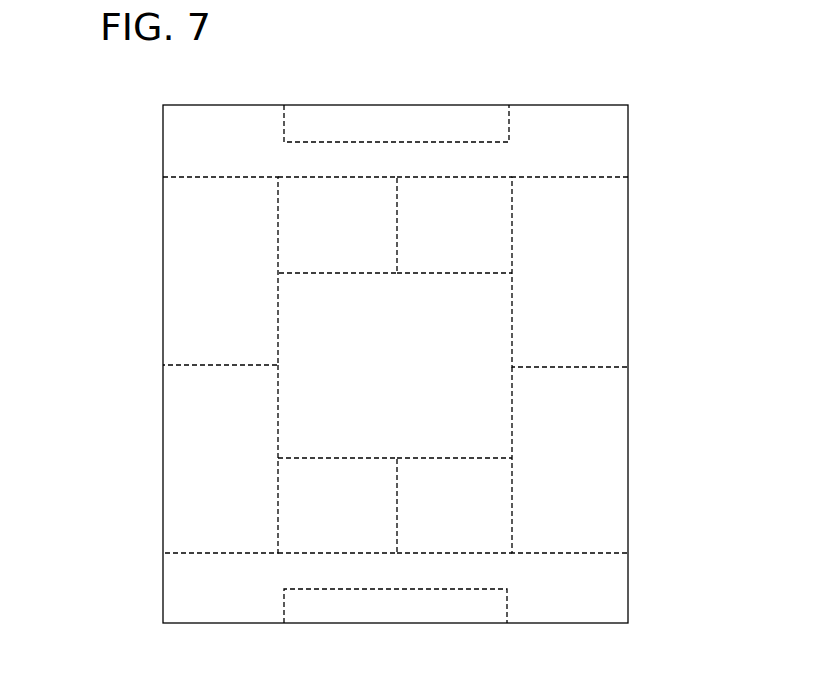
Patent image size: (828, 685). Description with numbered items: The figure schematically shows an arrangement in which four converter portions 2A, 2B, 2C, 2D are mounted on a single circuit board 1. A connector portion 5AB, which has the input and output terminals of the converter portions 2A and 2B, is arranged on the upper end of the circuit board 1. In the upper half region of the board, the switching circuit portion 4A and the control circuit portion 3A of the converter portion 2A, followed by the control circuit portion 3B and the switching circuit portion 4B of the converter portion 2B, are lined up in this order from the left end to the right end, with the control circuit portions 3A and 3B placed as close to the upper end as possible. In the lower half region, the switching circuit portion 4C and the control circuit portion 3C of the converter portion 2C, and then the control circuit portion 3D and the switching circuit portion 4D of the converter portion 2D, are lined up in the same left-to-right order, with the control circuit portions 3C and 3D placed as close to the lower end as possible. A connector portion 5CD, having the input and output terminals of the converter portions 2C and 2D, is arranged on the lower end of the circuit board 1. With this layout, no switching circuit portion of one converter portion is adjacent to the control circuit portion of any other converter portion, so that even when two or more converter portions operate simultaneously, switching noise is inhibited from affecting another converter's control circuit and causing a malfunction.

The circuit board 1 is at (613, 150).
The converter portion 2A is at (224, 271).
The converter portion 2B is at (568, 272).
The converter portion 2C is at (224, 459).
The converter portion 2D is at (569, 460).
The control circuit portion 3A is at (283, 218).
The control circuit portion 3B is at (490, 233).
The control circuit portion 3C is at (284, 519).
The control circuit portion 3D is at (495, 514).
The switching circuit portion 4A is at (176, 203).
The switching circuit portion 4B is at (603, 210).
The switching circuit portion 4C is at (176, 431).
The switching circuit portion 4D is at (605, 419).
The connector portion 5AB is at (432, 119).
The connector portion 5CD is at (411, 621).